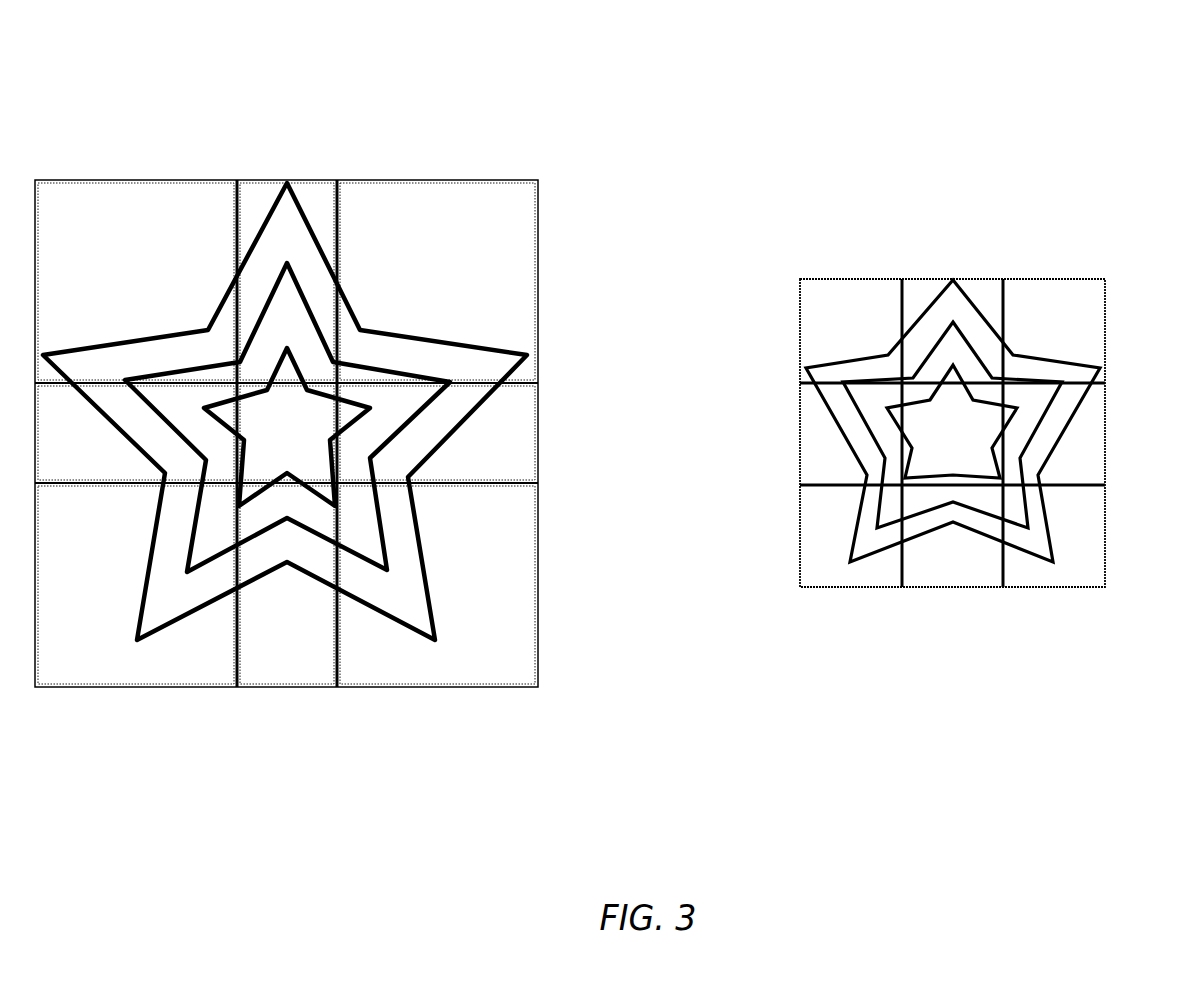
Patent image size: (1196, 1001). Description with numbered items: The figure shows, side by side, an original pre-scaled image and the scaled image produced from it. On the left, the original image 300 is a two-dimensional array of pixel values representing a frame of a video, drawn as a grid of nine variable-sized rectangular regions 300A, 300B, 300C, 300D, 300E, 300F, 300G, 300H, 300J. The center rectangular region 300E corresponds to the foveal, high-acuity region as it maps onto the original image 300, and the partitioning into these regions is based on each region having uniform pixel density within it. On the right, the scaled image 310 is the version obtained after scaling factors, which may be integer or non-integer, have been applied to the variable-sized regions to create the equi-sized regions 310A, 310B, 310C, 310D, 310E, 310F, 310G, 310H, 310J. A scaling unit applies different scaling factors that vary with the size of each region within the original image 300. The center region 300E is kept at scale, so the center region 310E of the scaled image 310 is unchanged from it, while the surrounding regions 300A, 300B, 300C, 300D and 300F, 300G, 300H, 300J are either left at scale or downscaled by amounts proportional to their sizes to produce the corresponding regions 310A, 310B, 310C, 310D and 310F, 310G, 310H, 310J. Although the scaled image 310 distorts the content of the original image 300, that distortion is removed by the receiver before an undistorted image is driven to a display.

The original image 300 is at (284, 92).
The region of original image 300A is at (159, 281).
The region of original image 300B is at (259, 256).
The region of original image 300C is at (469, 281).
The region of original image 300D is at (113, 463).
The center rectangular region 300E is at (316, 433).
The region of original image 300F is at (506, 468).
The region of original image 300G is at (126, 573).
The region of original image 300H is at (319, 630).
The region of original image 300J is at (454, 588).
The scaled image 310 is at (952, 118).
The scaled region 310A is at (819, 329).
The scaled region 310B is at (990, 279).
The scaled region 310C is at (1032, 329).
The scaled region 310D is at (804, 440).
The center scaled region 310E is at (924, 448).
The scaled region 310F is at (1097, 440).
The scaled region 310G is at (804, 545).
The scaled region 310H is at (924, 573).
The scaled region 310J is at (1097, 537).